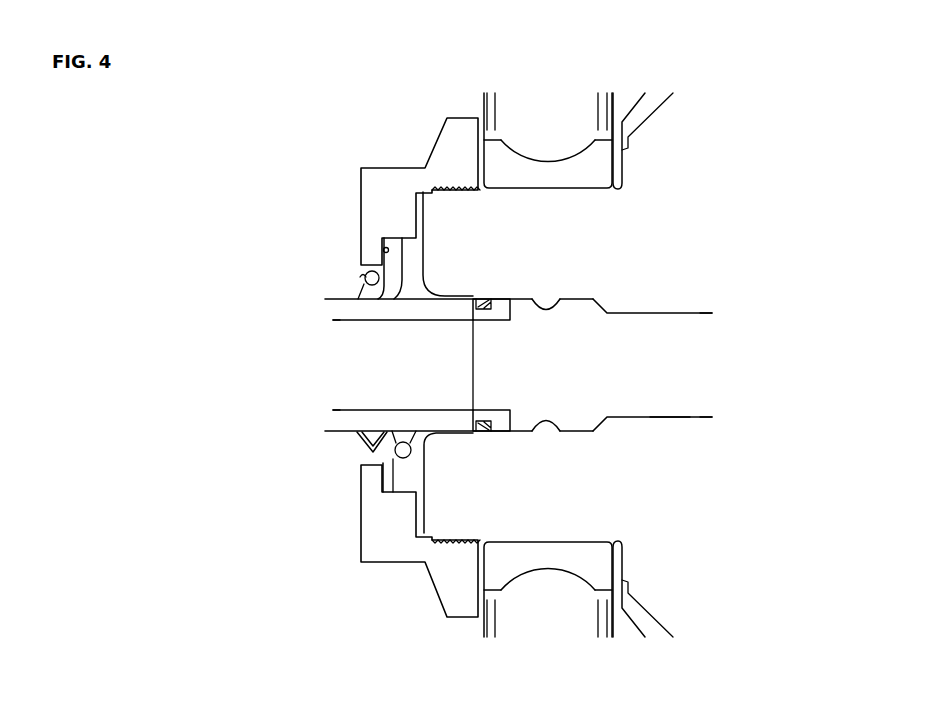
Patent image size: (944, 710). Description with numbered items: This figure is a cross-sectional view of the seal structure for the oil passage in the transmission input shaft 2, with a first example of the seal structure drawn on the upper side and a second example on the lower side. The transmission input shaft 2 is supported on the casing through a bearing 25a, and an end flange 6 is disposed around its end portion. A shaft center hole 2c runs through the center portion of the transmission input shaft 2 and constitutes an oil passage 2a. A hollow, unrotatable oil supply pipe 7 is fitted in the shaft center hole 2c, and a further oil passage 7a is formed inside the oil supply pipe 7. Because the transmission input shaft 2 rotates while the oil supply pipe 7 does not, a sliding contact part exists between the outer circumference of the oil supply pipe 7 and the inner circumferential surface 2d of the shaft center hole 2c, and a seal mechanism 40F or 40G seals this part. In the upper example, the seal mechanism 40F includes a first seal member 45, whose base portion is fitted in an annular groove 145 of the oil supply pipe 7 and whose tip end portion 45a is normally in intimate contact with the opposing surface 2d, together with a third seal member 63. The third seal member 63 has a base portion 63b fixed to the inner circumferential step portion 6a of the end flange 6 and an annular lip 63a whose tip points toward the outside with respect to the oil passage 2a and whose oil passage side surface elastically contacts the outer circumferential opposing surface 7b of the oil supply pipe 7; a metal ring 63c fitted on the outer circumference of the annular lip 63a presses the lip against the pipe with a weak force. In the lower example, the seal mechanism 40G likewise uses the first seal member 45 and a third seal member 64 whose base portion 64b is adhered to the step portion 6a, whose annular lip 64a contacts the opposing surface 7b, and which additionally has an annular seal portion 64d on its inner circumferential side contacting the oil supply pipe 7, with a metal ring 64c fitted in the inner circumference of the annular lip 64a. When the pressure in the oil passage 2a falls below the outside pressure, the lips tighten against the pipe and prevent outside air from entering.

The transmission input shaft 2 is at (697, 305).
The oil passage 2a is at (668, 378).
The shaft center hole 2c is at (587, 360).
The inner circumferential surface 2d is at (560, 297).
The end flange 6 is at (361, 190).
The inner circumferential step portion 6a is at (383, 249).
The oil supply pipe 7 is at (334, 322).
The oil passage 7a is at (545, 378).
The outer circumferential opposing surface 7b is at (325, 299).
The bearing 25a is at (548, 150).
The seal mechanism 40F is at (467, 290).
The seal mechanism 40G is at (465, 441).
The first seal member 45 is at (478, 428).
The tip end portion 45a is at (487, 297).
The annular groove 145 is at (510, 316).
The third seal member 63 is at (410, 272).
The annular lip 63a is at (384, 297).
The base portion 63b is at (420, 237).
The metal ring 63c is at (360, 277).
The third seal member 64 is at (370, 431).
The annular lip 64a is at (360, 445).
The base portion 64b is at (362, 481).
The metal ring 64c is at (408, 437).
The annular seal portion 64d is at (403, 441).